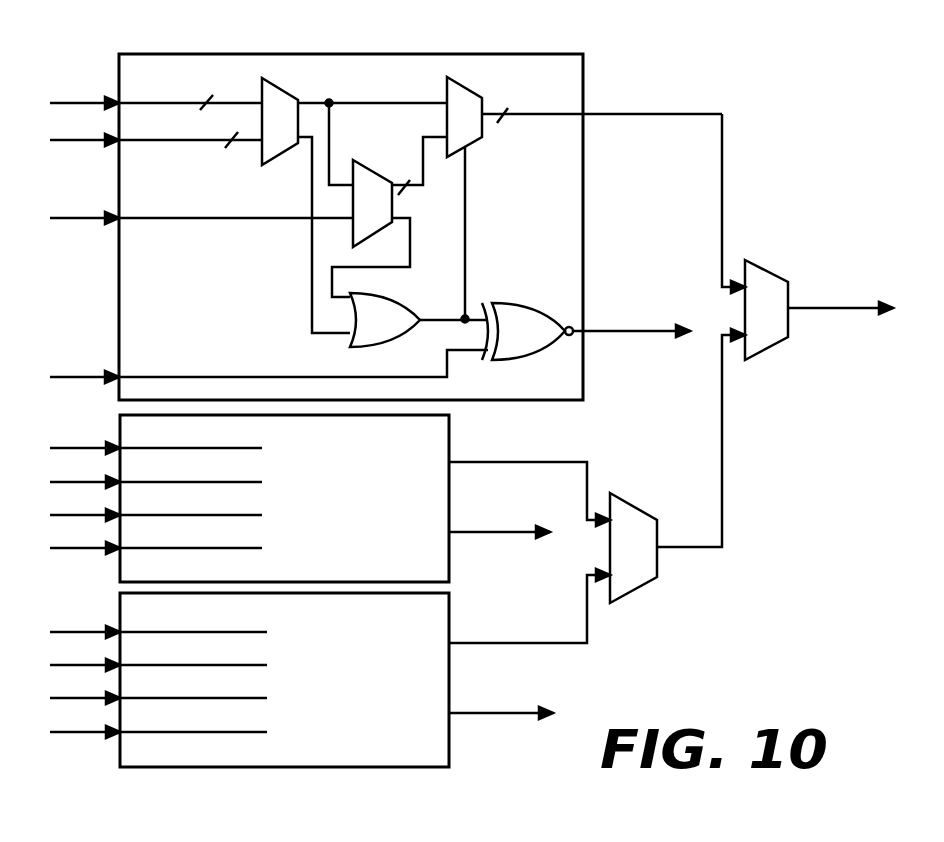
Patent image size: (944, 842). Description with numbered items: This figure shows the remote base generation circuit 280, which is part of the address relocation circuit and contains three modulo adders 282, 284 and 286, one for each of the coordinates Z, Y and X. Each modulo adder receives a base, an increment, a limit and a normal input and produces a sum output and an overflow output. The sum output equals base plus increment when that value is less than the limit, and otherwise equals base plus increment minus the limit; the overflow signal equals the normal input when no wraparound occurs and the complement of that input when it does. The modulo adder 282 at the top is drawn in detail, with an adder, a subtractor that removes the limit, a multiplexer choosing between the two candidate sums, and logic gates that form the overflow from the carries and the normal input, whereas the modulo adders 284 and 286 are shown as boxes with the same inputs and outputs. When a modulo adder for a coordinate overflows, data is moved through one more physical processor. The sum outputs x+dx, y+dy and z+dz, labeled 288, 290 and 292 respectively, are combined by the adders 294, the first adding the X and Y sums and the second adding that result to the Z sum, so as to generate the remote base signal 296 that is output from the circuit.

The remote base generation circuit 280 is at (470, 44).
The modulo adder 282 is at (583, 211).
The modulo adder 284 is at (449, 565).
The modulo adder 286 is at (450, 748).
The output signal x+dx 288 is at (589, 646).
The output signal y+dy 290 is at (589, 465).
The output signal z+dz 292 is at (722, 162).
The adders 294 is at (653, 573).
The remote base signal 296 is at (855, 310).